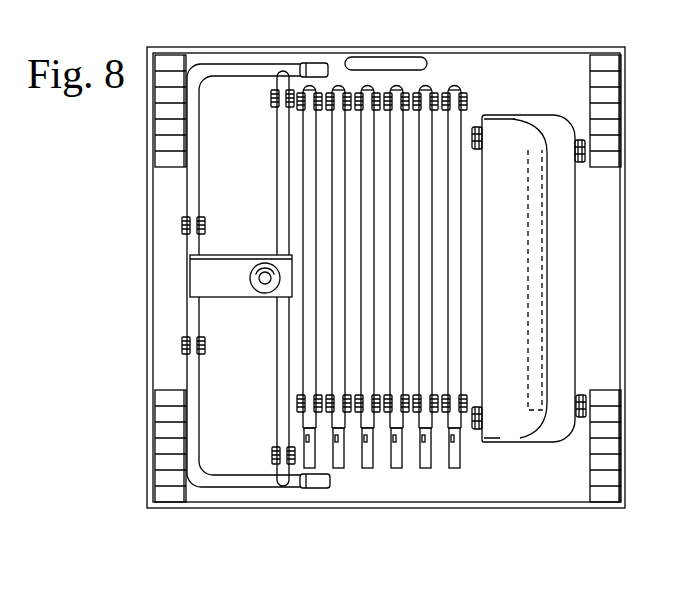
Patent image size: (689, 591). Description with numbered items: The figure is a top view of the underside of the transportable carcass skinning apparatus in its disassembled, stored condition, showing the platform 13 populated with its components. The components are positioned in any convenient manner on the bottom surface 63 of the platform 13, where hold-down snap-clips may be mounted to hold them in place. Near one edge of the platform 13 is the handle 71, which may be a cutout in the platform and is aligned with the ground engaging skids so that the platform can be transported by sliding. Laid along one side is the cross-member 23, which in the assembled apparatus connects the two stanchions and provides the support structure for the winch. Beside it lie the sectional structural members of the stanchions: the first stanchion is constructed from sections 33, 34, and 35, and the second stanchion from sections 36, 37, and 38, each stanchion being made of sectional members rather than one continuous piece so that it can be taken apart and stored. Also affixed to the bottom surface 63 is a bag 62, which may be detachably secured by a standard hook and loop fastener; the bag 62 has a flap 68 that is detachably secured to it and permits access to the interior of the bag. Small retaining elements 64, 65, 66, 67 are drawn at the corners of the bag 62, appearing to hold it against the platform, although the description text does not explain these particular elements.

The platform 13 is at (535, 50).
The handle 71 is at (417, 60).
The cross-member 23 is at (202, 142).
The section 33 is at (461, 462).
The section 34 is at (432, 464).
The section 35 is at (403, 468).
The section 36 is at (375, 468).
The section 37 is at (347, 468).
The section 38 is at (318, 470).
The bag 62 is at (575, 259).
The bottom surface 63 is at (557, 489).
The knee or knuckle joint 64 is at (474, 127).
The clip 65 is at (582, 163).
The clip 66 is at (580, 395).
The clip 67 is at (475, 430).
The flap 68 is at (522, 125).